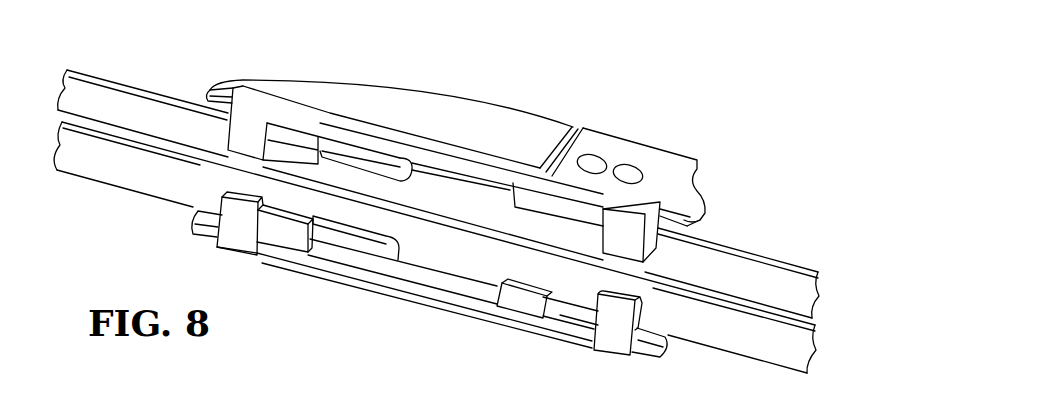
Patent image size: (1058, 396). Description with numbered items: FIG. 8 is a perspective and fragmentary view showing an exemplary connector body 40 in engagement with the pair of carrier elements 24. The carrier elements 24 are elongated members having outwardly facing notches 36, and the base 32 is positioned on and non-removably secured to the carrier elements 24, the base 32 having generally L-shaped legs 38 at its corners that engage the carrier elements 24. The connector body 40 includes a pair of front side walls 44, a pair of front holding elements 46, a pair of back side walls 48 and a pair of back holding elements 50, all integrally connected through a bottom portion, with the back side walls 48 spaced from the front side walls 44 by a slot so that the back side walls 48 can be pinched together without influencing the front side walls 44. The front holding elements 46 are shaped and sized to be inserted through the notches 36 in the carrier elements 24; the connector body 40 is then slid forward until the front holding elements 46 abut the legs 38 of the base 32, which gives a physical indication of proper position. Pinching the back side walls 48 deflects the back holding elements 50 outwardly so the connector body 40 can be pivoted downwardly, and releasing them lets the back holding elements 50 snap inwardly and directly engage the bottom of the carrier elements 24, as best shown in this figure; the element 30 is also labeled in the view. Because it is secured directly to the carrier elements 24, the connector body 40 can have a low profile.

The carrier elements 24 is at (118, 97).
The connector 30 is at (568, 328).
The base 32 is at (421, 306).
The notches 36 is at (382, 143).
The legs 38 is at (238, 130).
The connector body 40 is at (538, 112).
The front side walls 44 is at (453, 110).
The front holding elements 46 is at (300, 143).
The back side walls 48 is at (667, 160).
The back holding elements 50 is at (532, 203).